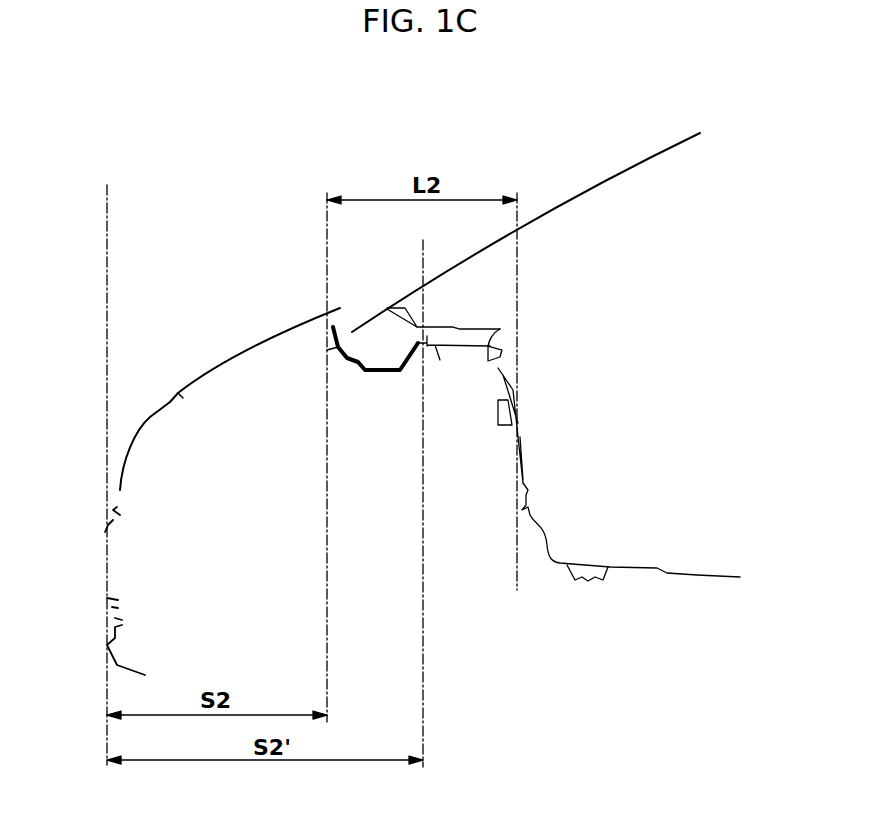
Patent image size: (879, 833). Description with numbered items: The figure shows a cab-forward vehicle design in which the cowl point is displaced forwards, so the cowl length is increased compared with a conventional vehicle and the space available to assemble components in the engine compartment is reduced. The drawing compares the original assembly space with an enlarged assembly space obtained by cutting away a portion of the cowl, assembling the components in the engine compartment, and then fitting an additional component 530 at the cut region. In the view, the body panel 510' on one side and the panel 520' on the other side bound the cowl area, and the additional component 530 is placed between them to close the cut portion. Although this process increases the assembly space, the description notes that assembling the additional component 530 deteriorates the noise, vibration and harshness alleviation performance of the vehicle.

The first roof panel 510' is at (222, 479).
The second roof panel 520' is at (526, 214).
The additional component 530 is at (333, 327).